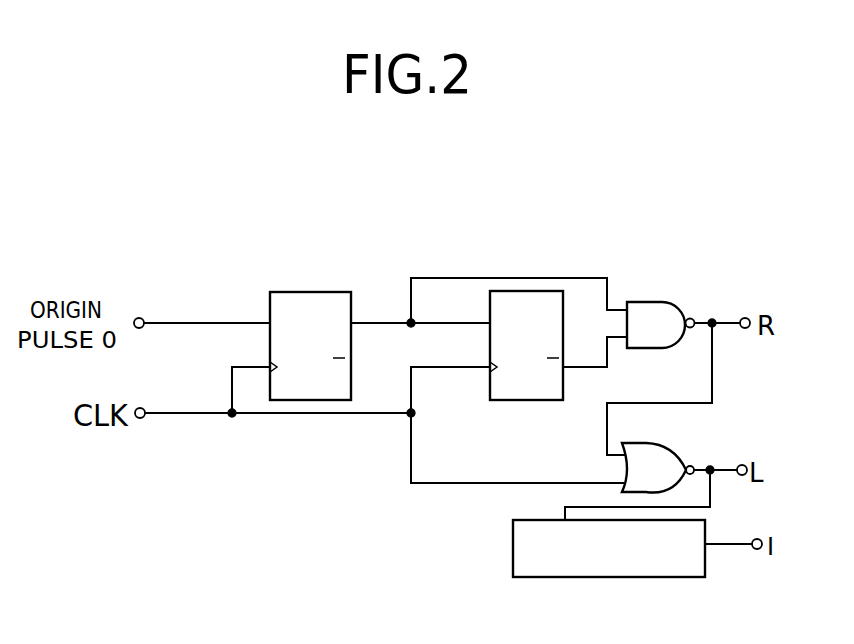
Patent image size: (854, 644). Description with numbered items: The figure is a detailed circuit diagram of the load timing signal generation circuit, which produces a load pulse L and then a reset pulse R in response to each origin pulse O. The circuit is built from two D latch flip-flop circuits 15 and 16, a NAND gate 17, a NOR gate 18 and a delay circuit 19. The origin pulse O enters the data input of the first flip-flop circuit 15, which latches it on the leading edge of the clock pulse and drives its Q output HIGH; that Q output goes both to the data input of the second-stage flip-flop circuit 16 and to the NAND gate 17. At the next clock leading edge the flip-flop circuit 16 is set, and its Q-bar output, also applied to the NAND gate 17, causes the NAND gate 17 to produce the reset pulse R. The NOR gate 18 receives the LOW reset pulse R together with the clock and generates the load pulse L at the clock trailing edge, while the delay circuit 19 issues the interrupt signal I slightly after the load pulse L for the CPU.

The D latch flip-flop circuit 15 is at (337, 292).
The D latch flip-flop circuit 16 is at (548, 291).
The NAND gate 17 is at (683, 303).
The NOR gate 18 is at (675, 447).
The delay circuit 19 is at (705, 578).